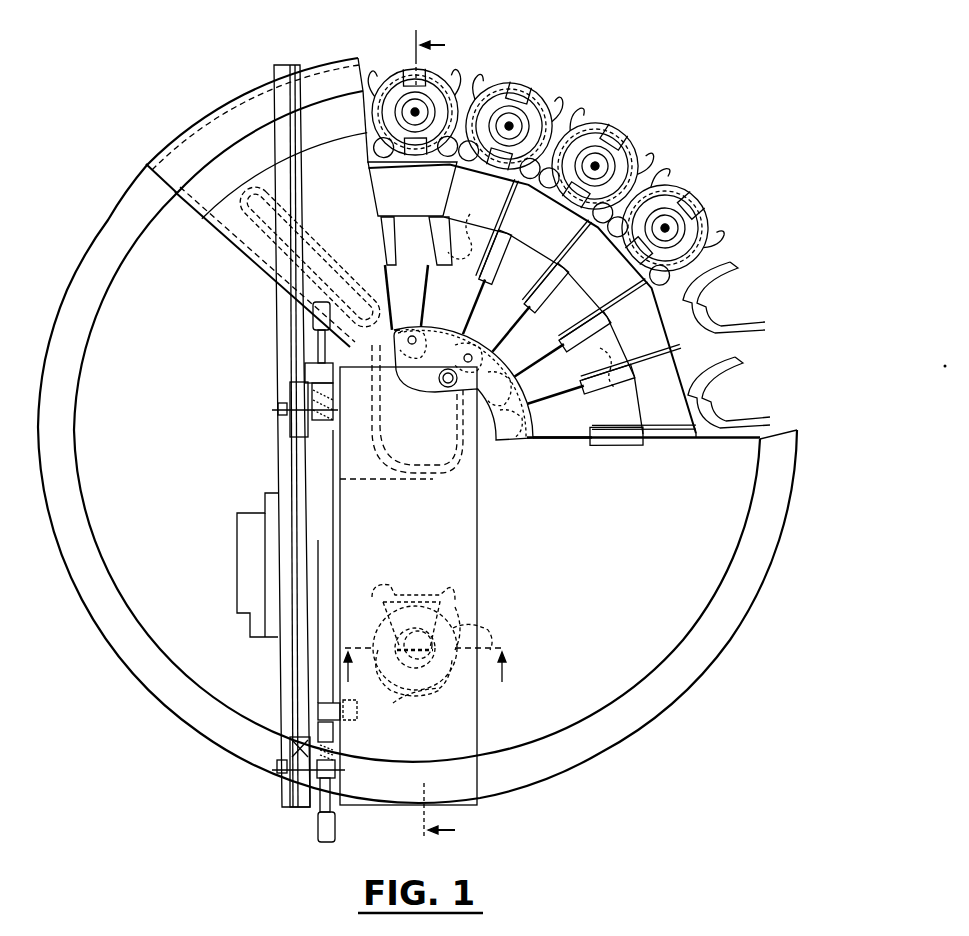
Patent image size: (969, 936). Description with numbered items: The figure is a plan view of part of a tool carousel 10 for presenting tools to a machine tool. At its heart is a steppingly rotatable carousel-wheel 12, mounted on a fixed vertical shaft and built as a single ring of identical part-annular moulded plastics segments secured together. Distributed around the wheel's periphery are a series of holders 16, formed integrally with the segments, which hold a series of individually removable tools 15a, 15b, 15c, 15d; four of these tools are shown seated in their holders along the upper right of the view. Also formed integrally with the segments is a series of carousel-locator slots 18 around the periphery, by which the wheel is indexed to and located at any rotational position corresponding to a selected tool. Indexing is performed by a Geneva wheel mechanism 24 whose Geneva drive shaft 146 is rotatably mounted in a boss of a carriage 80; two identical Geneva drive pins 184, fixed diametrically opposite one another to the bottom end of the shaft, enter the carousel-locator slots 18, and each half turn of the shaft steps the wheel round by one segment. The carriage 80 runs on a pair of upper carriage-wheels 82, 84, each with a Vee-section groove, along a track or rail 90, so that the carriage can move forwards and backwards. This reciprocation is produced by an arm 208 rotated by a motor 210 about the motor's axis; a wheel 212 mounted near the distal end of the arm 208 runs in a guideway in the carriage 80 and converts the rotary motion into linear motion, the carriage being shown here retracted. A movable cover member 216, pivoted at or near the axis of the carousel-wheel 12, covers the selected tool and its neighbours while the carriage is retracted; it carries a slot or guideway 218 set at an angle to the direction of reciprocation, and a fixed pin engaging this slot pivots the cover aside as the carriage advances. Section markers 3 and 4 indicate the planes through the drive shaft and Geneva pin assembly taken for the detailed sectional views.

The tool carousel 10 is at (88, 784).
The carousel-wheel 12 is at (565, 236).
The individually removable tool 15a is at (404, 85).
The individually removable tool 15b is at (522, 110).
The individually removable tool 15c is at (598, 148).
The individually removable tool 15d is at (672, 212).
The holder 16 is at (706, 338).
The carousel-locator slot 18 is at (458, 242).
The Geneva wheel mechanism 24 is at (520, 621).
The Geneva drive shaft 146 is at (452, 627).
The carriage 80 is at (456, 509).
The upper carriage-wheel 82 is at (290, 788).
The upper carriage-wheel 84 is at (286, 414).
The track or rail 90 is at (278, 352).
The Geneva drive pin 184 is at (398, 700).
The arm 208 is at (322, 660).
The motor 210 is at (250, 582).
The wheel 212 is at (362, 722).
The movable cover member 216 is at (215, 163).
The slot or guideway 218 is at (320, 250).
The section line 3- 3 is at (445, 438).
The section line 4- 4 is at (424, 674).